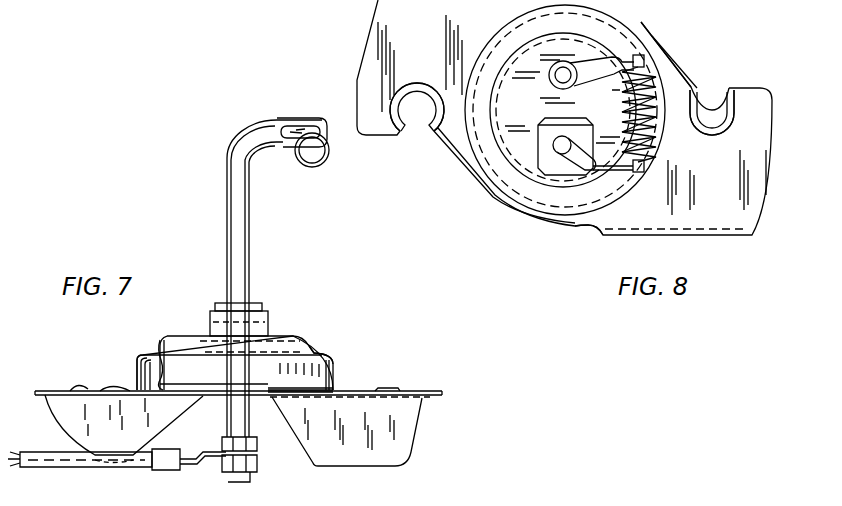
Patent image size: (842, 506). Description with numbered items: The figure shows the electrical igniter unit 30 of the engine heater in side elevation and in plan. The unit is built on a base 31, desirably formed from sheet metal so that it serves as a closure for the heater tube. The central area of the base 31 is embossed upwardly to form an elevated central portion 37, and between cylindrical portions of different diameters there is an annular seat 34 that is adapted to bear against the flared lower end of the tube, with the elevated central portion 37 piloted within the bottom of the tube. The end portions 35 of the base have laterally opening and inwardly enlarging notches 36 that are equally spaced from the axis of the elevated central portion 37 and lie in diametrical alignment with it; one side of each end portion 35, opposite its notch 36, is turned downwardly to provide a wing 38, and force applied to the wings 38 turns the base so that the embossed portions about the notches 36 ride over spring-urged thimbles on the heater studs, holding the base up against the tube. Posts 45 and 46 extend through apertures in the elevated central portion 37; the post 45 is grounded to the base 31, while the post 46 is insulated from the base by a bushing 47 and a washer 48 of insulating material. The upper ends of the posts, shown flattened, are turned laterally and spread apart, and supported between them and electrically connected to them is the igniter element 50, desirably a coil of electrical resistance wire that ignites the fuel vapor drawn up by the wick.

In FIG. 7, the electrical igniter unit 30 is at (351, 376).
In FIG. 8, the electrical igniter unit 30 is at (653, 23).
In FIG. 7, the base 31 is at (158, 356).
In FIG. 8, the base 31 is at (568, 228).
In FIG. 7, the annular seat 34 is at (332, 353).
In FIG. 8, the annular seat 34 is at (612, 183).
In FIG. 7, the end portions 35 is at (413, 392).
In FIG. 8, the end portions 35 is at (374, 46).
In FIG. 7, the notches 36 is at (82, 389).
In FIG. 8, the notches 36 is at (416, 124).
In FIG. 7, the elevated central portion 37 is at (296, 336).
In FIG. 8, the elevated central portion 37 is at (563, 110).
In FIG. 7, the wing 38 is at (68, 413).
In FIG. 8, the post 45 is at (588, 72).
In FIG. 7, the post 46 is at (247, 232).
In FIG. 8, the post 46 is at (578, 160).
In FIG. 7, the bushing 47 is at (215, 322).
In FIG. 8, the bushing 47 is at (546, 154).
In FIG. 7, the washer 48 is at (190, 360).
In FIG. 7, the igniter element 50 is at (327, 160).
In FIG. 8, the igniter element 50 is at (657, 144).